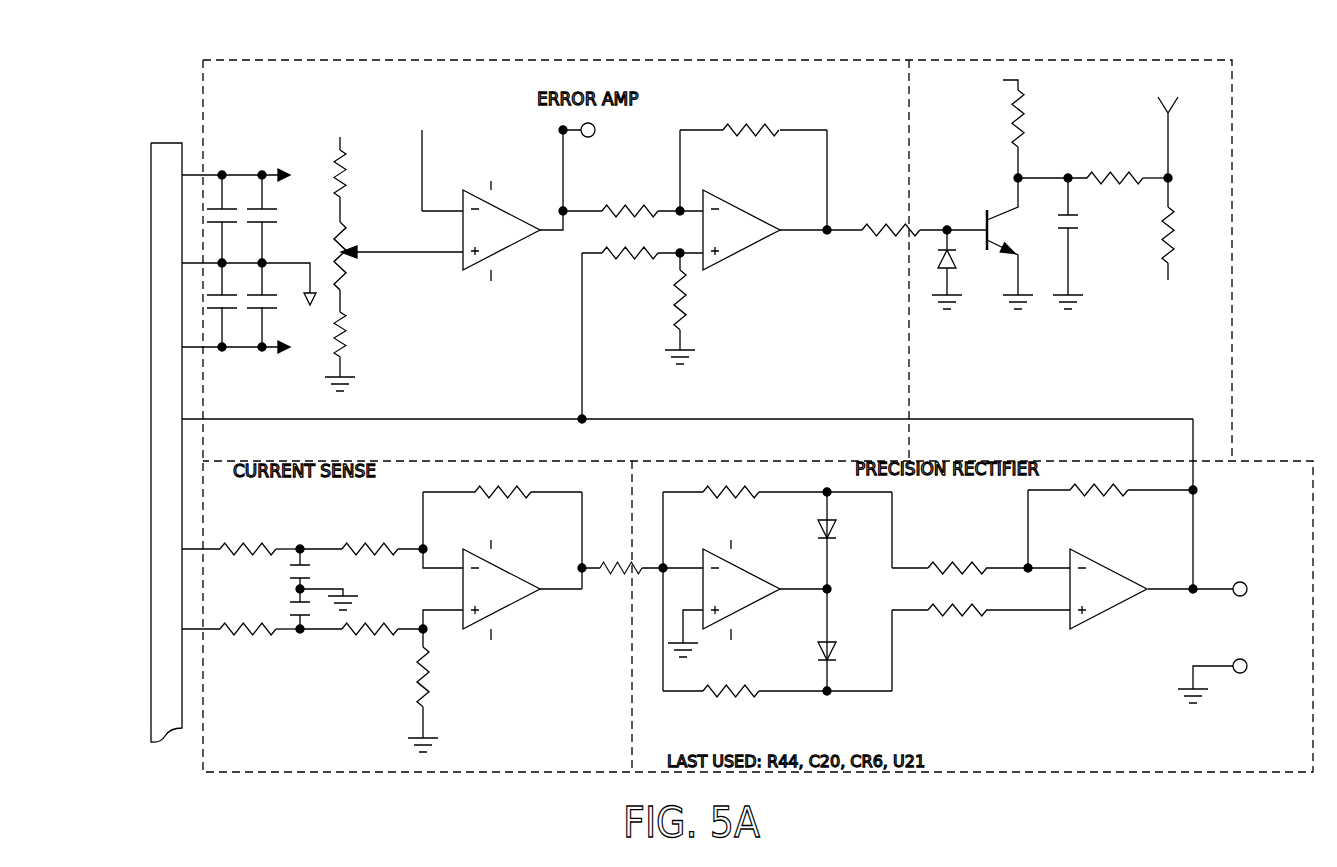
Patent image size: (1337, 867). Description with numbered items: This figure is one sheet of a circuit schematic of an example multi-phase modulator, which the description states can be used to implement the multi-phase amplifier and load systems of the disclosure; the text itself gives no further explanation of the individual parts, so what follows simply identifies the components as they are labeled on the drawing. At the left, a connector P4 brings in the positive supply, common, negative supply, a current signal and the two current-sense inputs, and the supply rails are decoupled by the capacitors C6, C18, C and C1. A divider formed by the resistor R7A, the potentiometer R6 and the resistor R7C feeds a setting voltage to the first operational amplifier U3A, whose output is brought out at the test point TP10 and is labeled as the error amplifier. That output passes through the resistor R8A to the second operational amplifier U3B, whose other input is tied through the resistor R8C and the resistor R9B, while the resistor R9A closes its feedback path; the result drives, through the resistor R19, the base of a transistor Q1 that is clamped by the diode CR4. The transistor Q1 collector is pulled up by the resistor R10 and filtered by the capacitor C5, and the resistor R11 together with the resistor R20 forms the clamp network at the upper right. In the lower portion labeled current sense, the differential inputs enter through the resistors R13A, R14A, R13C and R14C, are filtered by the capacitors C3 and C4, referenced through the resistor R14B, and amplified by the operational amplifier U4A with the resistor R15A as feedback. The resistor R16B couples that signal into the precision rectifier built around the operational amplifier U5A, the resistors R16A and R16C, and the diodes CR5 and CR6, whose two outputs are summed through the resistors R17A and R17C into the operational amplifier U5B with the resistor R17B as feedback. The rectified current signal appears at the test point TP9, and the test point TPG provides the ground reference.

The connector P4 is at (635, 429).
The capacitor C6 A,B,C 10uF C6 is at (231, 219).
The capacitor C18 A,B,C 10uF C18 is at (292, 219).
The capacitor C 10uF C is at (223, 307).
The capacitor C1 10uF C1 is at (274, 307).
The resistor R7A 1K R7A is at (360, 167).
The potentiometer R6 10K R6 is at (398, 264).
The resistor R7C 1K R7C is at (358, 347).
The op-amp U3A error amplifier U3A is at (501, 211).
The test point TP10 SET TP10 is at (610, 139).
The resistor R8A 1K R8A is at (633, 198).
The resistor R8C 1K R8C is at (640, 322).
The resistor R9B 10K R9B is at (697, 308).
The resistor R9A 10K R9A is at (753, 165).
The op-amp U3B is at (775, 230).
The resistor R19 10K R19 is at (917, 219).
The diode CR4 is at (936, 269).
The transistor Q1 is at (1010, 243).
The resistor R10 1M R10 is at (1019, 126).
The capacitor C5 is at (1064, 241).
The resistor R11 510K R11 is at (1120, 166).
The resistor R20 10M R20 is at (1171, 189).
The resistor R13A 1K R13A is at (257, 538).
The resistor R14A 10K R14A is at (381, 545).
The resistor R13C 1K R13C is at (257, 618).
The resistor R14C 10K R14C is at (381, 609).
The capacitor C3 .01 C3 is at (306, 579).
The capacitor C4 0.1 C4 is at (298, 604).
The resistor R14B 10K R14B is at (445, 690).
The resistor R15A 10K R15A is at (502, 526).
The op-amp U4A current sense U4A is at (514, 588).
The resistor R16B 10K R16B is at (640, 557).
The op-amp U5A precision rectifier U5A is at (747, 588).
The resistor R16A 10K R16A is at (777, 516).
The resistor R16C 10K R16C is at (777, 632).
The diode CR5 is at (849, 542).
The diode CR6 is at (849, 640).
The resistor R17A 10K R17A is at (981, 557).
The resistor R17C 10K R17C is at (981, 600).
The resistor R17B 10K R17B is at (1112, 504).
The op-amp U5B is at (1142, 589).
The test point TP9 CURRENT TP9 is at (1247, 575).
The test point TPG ground TPG is at (1232, 679).